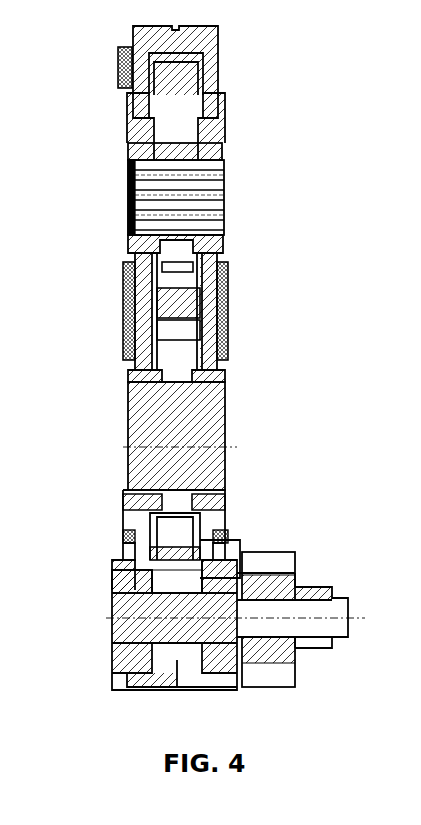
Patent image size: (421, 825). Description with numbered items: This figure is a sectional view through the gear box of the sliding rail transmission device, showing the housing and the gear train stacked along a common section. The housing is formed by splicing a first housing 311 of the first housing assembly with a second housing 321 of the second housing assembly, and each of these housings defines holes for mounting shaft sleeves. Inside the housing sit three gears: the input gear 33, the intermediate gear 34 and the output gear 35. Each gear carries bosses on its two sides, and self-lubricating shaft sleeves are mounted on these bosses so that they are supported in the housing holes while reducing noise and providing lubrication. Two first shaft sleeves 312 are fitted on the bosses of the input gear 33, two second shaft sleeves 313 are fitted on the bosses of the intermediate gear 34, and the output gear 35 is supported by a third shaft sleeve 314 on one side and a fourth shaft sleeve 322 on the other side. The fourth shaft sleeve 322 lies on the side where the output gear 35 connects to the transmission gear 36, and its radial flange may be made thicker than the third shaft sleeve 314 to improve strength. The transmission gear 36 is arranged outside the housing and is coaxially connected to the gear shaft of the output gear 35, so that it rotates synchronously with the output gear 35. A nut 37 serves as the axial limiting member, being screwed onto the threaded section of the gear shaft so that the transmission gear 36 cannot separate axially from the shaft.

The first housing 311 is at (117, 50).
The second housing 321 is at (222, 40).
The first shaft sleeve 312 is at (126, 128).
The input gear 33 is at (235, 172).
The second shaft sleeve 313 is at (113, 367).
The intermediate gear 34 is at (222, 436).
The fourth shaft sleeve 322 is at (232, 552).
The third shaft sleeve 314 is at (120, 565).
The output gear 35 is at (195, 690).
The transmission gear 36 is at (300, 557).
The nut 37 is at (300, 642).